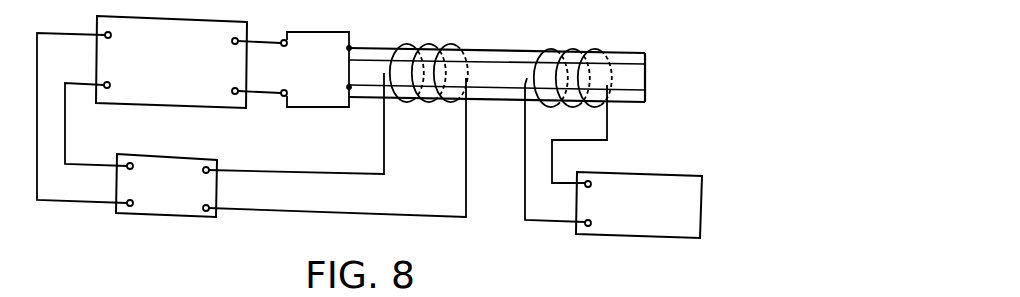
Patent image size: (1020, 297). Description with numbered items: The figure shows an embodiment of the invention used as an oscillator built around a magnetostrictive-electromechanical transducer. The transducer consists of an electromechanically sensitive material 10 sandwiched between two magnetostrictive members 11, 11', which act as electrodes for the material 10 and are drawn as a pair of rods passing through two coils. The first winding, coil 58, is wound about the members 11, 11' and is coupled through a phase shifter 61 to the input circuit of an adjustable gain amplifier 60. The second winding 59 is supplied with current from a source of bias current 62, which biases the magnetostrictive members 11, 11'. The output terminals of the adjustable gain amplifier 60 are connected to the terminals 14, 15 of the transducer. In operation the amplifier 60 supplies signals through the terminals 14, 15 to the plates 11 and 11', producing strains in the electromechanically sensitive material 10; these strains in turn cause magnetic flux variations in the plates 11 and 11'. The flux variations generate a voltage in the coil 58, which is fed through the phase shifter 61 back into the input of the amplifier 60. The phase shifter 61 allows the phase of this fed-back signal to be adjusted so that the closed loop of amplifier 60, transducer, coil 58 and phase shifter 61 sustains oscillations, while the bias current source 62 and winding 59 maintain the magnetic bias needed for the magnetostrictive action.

The electromechanically sensitive material 10 is at (533, 81).
The magnetostrictive member 11 is at (521, 58).
The magnetostrictive member 11' is at (523, 99).
The transducer terminal 14 is at (288, 44).
The transducer terminal 15 is at (288, 92).
The winding 58 is at (441, 47).
The second winding 59 is at (583, 53).
The adjustable gain amplifier 60 is at (205, 20).
The phase shifter 61 is at (167, 217).
The source of bias current 62 is at (647, 238).